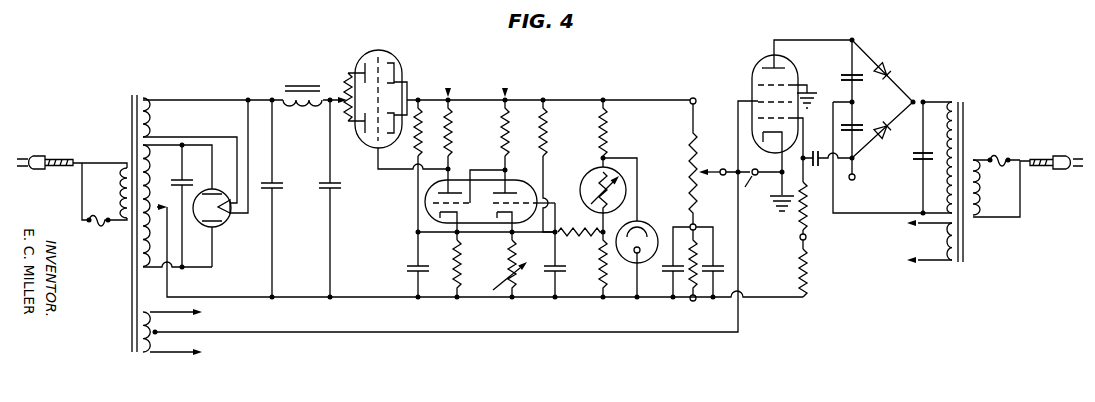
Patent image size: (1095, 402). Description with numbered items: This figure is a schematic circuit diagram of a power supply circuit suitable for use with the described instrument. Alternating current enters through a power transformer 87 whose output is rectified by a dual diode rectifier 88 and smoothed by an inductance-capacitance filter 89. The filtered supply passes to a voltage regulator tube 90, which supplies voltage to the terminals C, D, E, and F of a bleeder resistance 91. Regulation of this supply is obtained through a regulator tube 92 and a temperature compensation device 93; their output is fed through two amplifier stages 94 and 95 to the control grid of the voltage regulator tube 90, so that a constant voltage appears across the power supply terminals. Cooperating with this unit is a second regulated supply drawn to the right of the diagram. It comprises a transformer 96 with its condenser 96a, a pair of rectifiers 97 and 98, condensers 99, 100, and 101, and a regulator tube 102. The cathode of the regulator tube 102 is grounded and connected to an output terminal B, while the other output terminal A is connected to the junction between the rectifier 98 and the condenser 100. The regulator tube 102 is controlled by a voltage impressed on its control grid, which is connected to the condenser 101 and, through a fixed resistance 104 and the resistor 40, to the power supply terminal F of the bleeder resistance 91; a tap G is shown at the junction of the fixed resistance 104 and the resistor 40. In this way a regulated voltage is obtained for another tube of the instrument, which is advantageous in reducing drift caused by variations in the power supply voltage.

The power transformer 87 is at (134, 90).
The dual diode rectifier 88 is at (221, 224).
The inductance-capacitance filter 89 is at (311, 84).
The voltage regulator tube 90 is at (396, 59).
The bleeder resistance 91 is at (691, 162).
The regulator tube 92 is at (643, 222).
The temperature compensation device 93 is at (585, 172).
The amplifier stage 94 is at (505, 95).
The amplifier stage 95 is at (449, 95).
The transformer 96 is at (959, 102).
The condenser 96a is at (918, 166).
The rectifier 97 is at (894, 72).
The rectifier 98 is at (883, 140).
The condenser 99 is at (846, 69).
The condenser 100 is at (860, 120).
The condenser 101 is at (823, 170).
The regulator tube 102 is at (764, 56).
The fixed resistance 104 is at (800, 222).
The resistor 40 is at (808, 265).
The output terminal A is at (857, 179).
The output terminal B is at (752, 186).
The terminal C is at (696, 98).
The terminal D is at (725, 169).
The terminal E is at (696, 224).
The power supply terminal F is at (690, 302).
The terminal G is at (808, 237).